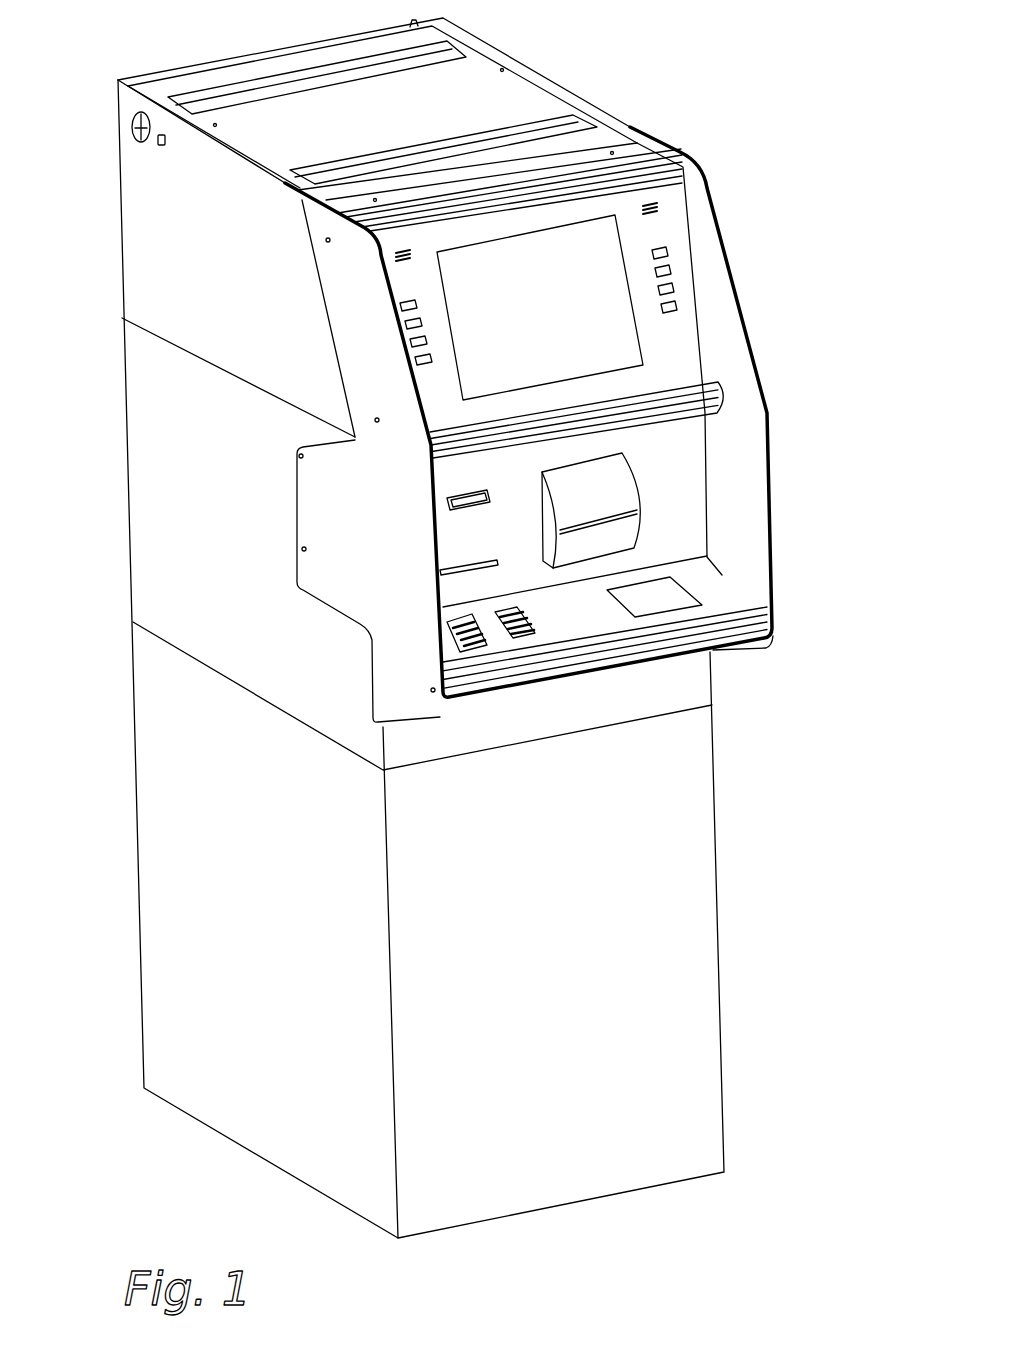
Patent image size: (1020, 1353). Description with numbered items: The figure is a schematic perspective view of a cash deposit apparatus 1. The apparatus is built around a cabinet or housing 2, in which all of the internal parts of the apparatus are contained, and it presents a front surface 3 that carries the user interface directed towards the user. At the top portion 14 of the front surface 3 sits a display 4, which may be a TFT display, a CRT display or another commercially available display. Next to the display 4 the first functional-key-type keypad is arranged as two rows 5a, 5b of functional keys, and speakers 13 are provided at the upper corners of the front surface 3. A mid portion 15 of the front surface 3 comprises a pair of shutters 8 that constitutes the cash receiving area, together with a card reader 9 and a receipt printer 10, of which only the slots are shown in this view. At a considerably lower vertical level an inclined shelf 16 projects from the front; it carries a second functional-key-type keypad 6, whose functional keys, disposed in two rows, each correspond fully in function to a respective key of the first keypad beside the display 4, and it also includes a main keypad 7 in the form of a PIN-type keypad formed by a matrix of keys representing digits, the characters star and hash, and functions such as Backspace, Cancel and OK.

The cash deposit apparatus 1 is at (471, 628).
The cabinet or housing 2 is at (160, 553).
The front surface 3 is at (515, 401).
The display 4 is at (537, 304).
The row of functional keys 5a is at (666, 251).
The row of functional keys 5b is at (415, 359).
The second functional-key-type keypad 6 is at (492, 630).
The main keypad 7 is at (663, 593).
The shutters 8 is at (600, 483).
The card reader 9 is at (443, 510).
The receipt printer 10 is at (460, 565).
The speakers 13 is at (398, 257).
The top portion 14 is at (693, 347).
The mid portion 15 is at (740, 500).
The inclined shelf 16 is at (568, 632).